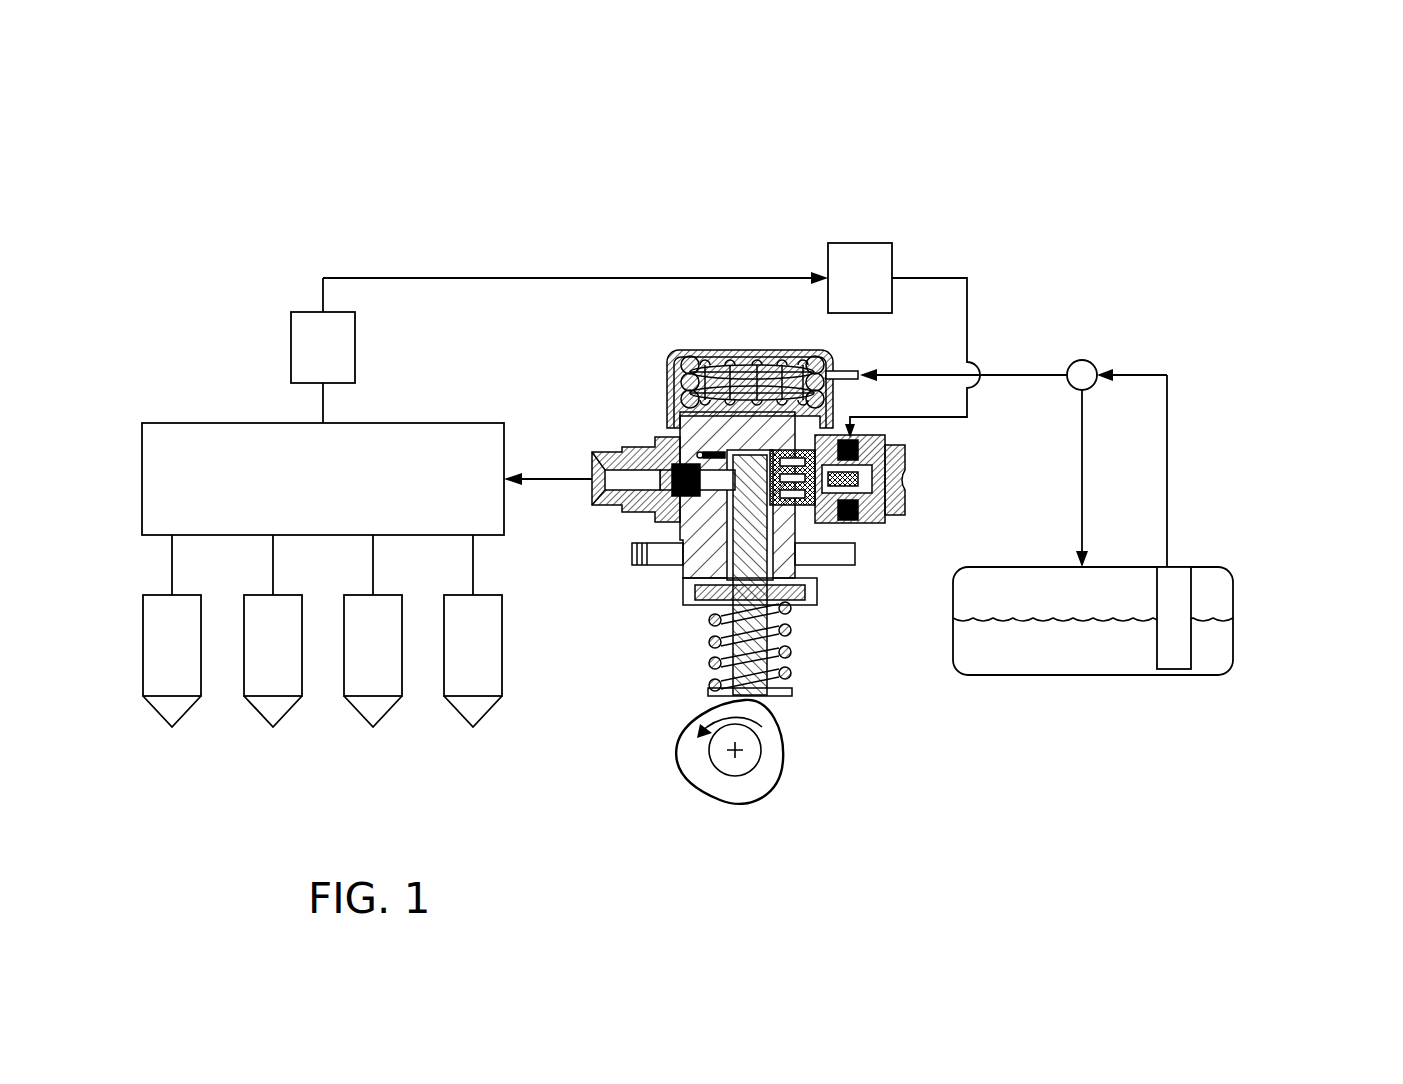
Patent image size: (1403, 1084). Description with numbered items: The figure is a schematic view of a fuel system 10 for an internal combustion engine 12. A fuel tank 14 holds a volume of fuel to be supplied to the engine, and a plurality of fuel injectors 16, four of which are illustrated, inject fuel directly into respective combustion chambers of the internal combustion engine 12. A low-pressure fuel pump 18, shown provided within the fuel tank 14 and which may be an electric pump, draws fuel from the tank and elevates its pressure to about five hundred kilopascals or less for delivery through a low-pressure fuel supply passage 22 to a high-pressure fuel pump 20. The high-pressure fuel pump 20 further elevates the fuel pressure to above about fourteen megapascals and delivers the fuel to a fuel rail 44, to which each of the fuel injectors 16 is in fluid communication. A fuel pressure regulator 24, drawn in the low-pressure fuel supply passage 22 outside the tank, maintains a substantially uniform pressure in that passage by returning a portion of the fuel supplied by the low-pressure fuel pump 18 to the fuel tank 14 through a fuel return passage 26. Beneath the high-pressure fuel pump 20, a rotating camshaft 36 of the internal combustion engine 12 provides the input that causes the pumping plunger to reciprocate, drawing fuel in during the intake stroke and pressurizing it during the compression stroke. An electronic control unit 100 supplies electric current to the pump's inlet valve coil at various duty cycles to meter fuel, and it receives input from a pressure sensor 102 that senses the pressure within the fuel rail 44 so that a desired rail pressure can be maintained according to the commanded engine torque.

The fuel system 10 is at (1268, 132).
The internal combustion engine 12 is at (306, 763).
The fuel tank 14 is at (1233, 647).
The fuel injectors 16 is at (155, 662).
The low-pressure fuel pump 18 is at (1171, 645).
The high-pressure fuel pump 20 is at (858, 634).
The low-pressure fuel supply passage 22 is at (1167, 470).
The fuel pressure regulator 24 is at (1084, 366).
The fuel return passage 26 is at (1080, 533).
The camshaft 36 is at (715, 710).
The fuel rail 44 is at (306, 493).
The electronic control unit 100 is at (835, 292).
The pressure sensor 102 is at (298, 360).